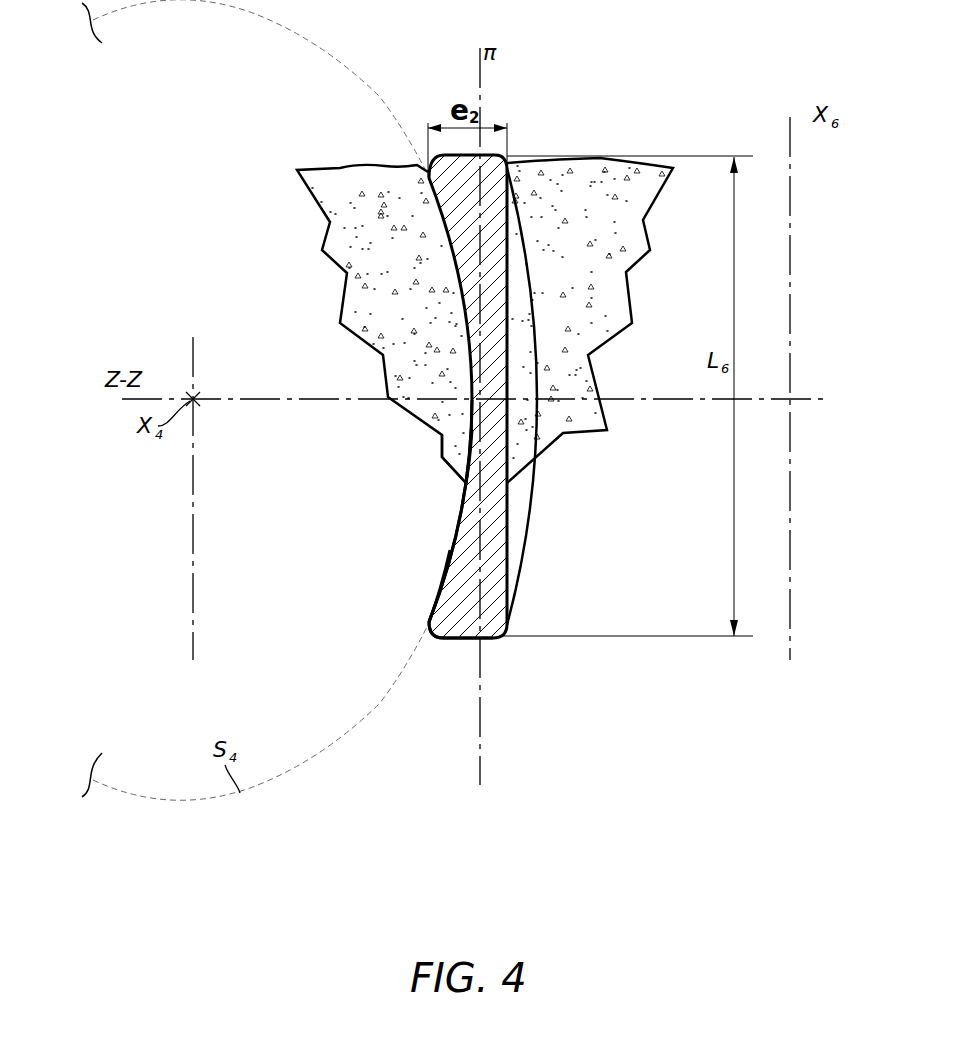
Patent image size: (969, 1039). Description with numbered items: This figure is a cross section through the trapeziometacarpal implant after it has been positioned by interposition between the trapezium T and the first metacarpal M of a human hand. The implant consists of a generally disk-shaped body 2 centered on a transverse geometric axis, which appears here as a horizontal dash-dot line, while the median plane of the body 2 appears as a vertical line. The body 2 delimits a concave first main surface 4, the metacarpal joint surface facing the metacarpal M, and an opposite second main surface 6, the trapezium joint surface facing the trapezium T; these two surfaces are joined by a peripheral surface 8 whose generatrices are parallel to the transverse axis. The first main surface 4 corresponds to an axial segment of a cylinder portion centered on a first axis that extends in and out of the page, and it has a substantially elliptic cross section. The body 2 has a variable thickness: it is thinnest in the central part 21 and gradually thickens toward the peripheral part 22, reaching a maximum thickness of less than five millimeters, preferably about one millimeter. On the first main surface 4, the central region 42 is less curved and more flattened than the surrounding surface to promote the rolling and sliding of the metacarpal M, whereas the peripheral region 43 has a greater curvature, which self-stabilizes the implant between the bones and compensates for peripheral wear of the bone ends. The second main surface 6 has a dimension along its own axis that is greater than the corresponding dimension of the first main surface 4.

The body 2 is at (470, 300).
The first main surface 4 is at (438, 558).
The second main surface 6 is at (515, 568).
The peripheral surface 8 is at (486, 645).
The central part 21 is at (468, 485).
The peripheral part 22 is at (460, 622).
The central region 42 is at (466, 455).
The peripheral region 43 is at (437, 588).
The first metacarpal M is at (345, 223).
The trapezium T is at (635, 198).